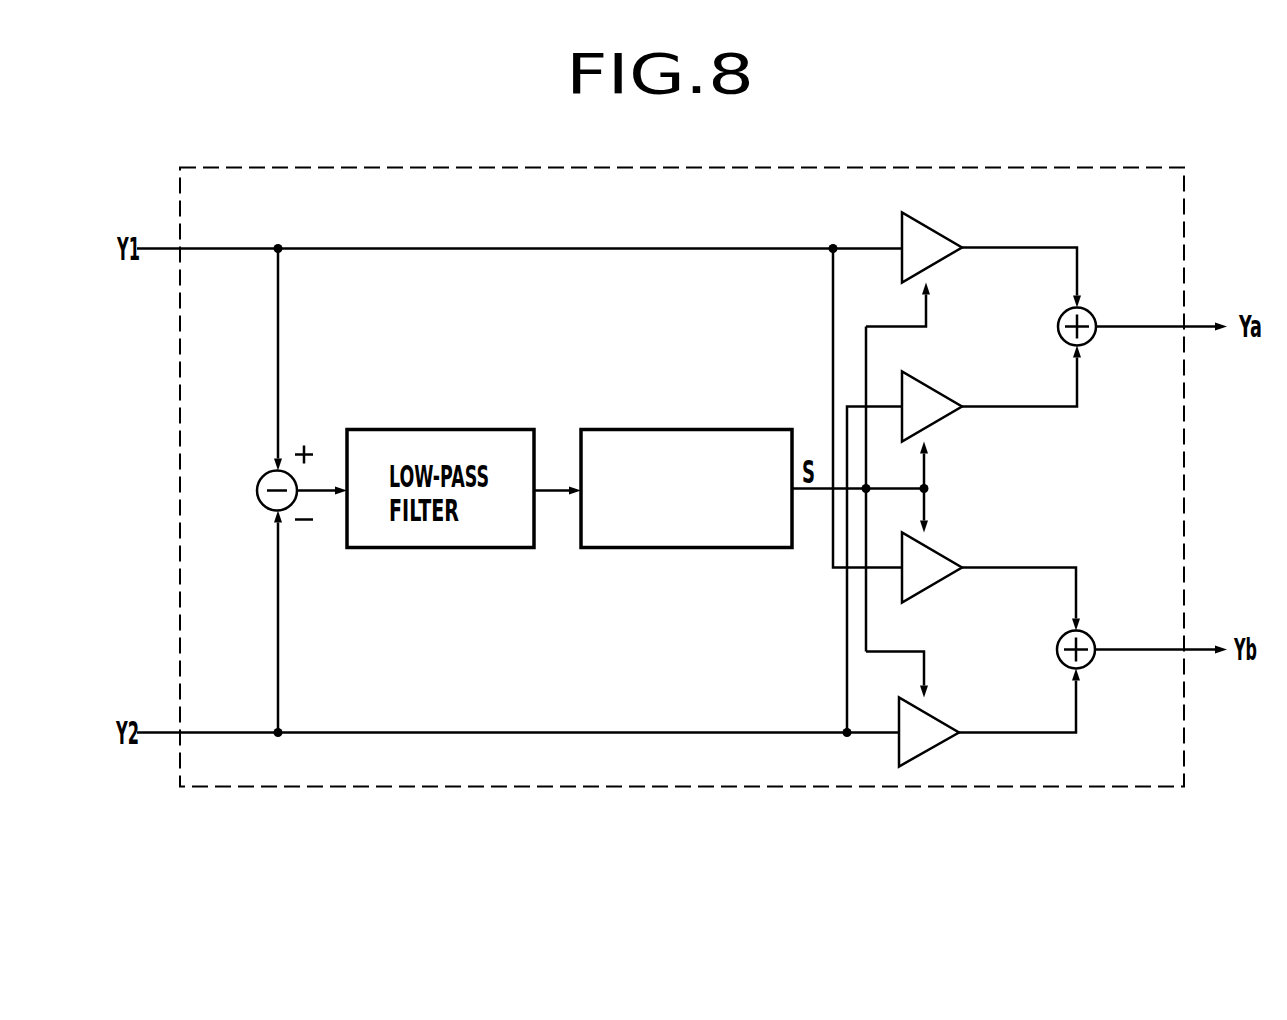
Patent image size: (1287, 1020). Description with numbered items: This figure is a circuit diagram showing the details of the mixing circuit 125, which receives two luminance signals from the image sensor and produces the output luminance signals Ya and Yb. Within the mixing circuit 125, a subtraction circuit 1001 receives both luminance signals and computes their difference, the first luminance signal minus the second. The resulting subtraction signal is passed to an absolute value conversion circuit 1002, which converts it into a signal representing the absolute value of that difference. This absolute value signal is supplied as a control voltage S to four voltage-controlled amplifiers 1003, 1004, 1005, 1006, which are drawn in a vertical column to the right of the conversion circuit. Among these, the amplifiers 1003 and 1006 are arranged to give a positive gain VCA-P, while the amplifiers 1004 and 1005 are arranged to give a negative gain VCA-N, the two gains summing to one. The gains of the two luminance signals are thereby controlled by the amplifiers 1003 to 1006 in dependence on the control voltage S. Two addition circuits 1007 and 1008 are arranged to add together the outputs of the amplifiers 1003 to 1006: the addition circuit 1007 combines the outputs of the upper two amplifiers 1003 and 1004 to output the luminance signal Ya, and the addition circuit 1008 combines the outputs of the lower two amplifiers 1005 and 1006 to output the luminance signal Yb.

The mixing circuit 125 is at (1120, 166).
The subtraction circuit 1001 is at (259, 488).
The absolute value conversion circuit 1002 is at (752, 428).
The voltage-controlled amplifier 1003 is at (952, 238).
The voltage-controlled amplifier 1004 is at (952, 404).
The voltage-controlled amplifier 1005 is at (952, 564).
The voltage-controlled amplifier 1006 is at (950, 729).
The addition circuit 1007 is at (1094, 318).
The addition circuit 1008 is at (1094, 642).